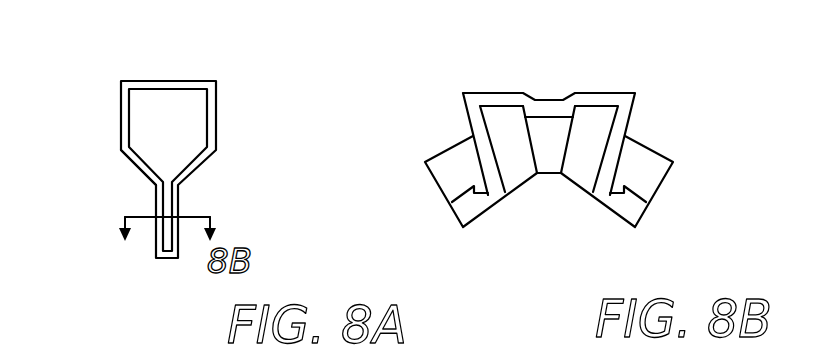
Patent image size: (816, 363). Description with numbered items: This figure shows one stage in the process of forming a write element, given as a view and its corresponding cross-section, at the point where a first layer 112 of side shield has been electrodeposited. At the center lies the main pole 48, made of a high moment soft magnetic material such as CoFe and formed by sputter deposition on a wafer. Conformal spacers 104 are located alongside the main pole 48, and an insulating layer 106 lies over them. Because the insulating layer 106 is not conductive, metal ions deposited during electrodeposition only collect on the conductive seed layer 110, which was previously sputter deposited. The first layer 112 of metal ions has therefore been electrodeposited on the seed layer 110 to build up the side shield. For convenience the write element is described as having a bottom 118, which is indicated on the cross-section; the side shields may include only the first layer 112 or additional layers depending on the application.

In FIG. 8B, the main pole 48 is at (548, 128).
In FIG. 8B, the conformal spacers 104 is at (500, 125).
In FIG. 8A, the insulating layer 106 is at (197, 110).
In FIG. 8B, the insulating layer 106 is at (466, 110).
In FIG. 8B, the seed layer 110 is at (453, 198).
In FIG. 8A, the first layer 112 is at (120, 145).
In FIG. 8B, the first layer 112 is at (447, 170).
In FIG. 8B, the bottom 118 is at (566, 195).